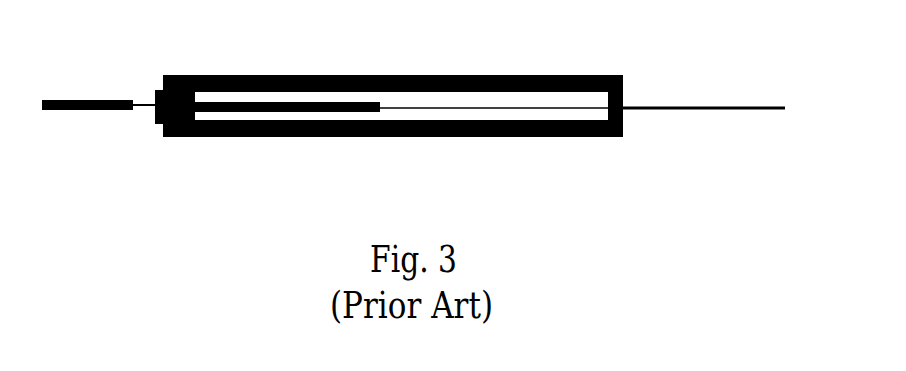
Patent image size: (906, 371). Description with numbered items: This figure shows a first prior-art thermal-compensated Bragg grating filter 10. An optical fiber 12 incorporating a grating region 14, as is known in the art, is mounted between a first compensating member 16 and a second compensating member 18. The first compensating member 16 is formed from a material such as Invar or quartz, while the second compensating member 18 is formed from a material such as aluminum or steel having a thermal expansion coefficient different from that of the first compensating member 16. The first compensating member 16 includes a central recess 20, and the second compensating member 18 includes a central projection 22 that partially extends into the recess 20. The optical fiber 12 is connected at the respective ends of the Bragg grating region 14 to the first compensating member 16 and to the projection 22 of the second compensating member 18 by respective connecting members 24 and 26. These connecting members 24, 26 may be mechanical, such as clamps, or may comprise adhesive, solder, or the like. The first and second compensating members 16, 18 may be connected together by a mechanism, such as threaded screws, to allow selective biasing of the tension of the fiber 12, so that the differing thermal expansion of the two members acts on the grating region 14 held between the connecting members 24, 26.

The thermal-compensated Bragg grating filter 10 is at (678, 78).
The optical fiber 12 is at (700, 109).
The grating region 14 is at (517, 108).
The first compensating member 16 is at (530, 75).
The second compensating member 18 is at (152, 110).
The central recess 20 is at (415, 112).
The central projection 22 is at (278, 103).
The connecting member 24 is at (380, 103).
The connecting member 26 is at (625, 113).